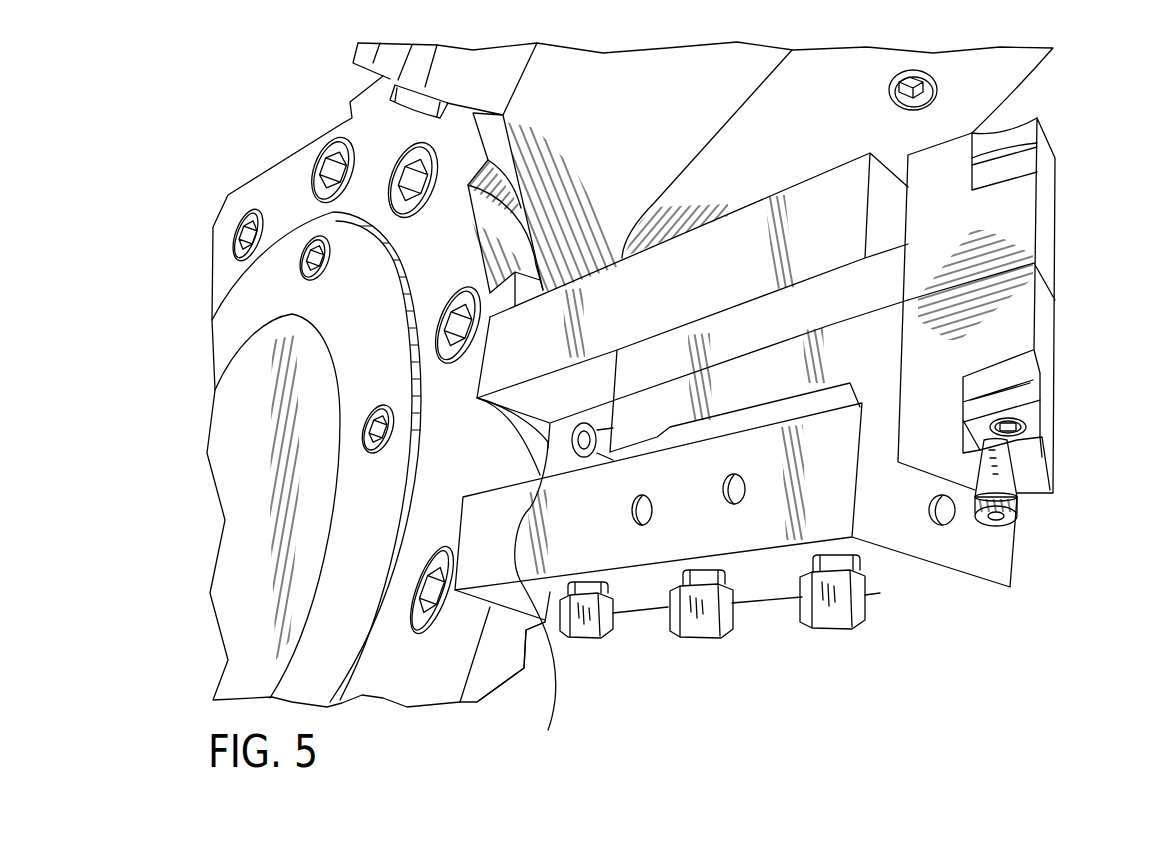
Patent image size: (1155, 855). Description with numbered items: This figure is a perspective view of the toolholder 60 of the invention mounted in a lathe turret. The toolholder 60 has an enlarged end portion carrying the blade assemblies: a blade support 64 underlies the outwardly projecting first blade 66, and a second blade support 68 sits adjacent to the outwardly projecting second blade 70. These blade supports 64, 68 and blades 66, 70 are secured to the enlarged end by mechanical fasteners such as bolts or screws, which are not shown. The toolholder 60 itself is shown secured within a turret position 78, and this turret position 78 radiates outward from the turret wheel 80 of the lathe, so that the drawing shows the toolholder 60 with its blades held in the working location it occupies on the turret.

The toolholder 60 is at (767, 356).
The blade support 64 is at (1032, 163).
The first blade 66 is at (1033, 136).
The blade support 68 is at (1022, 366).
The second blade 70 is at (1028, 393).
The turret position 78 is at (516, 570).
The turret wheel 80 is at (403, 635).